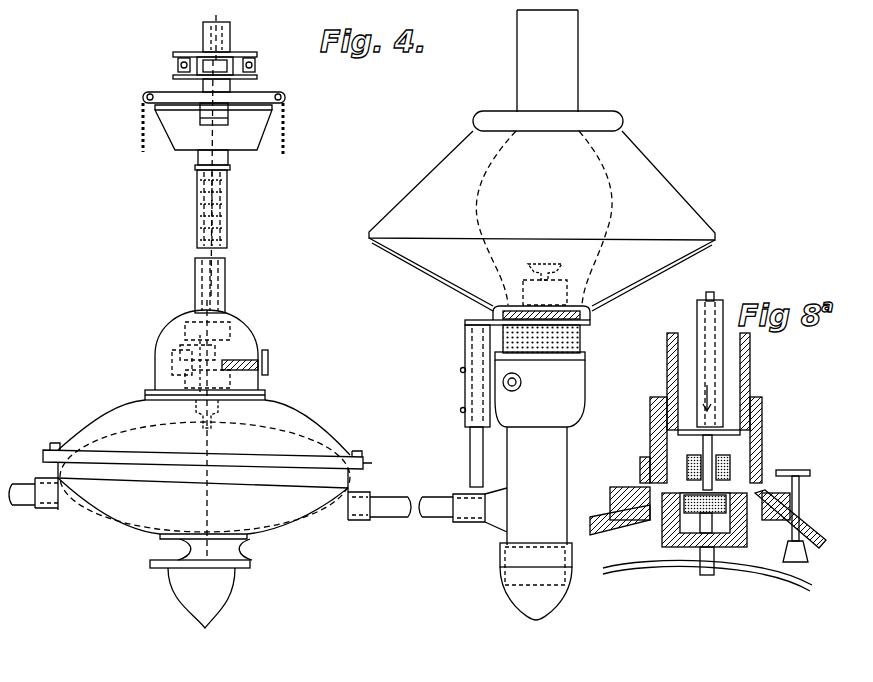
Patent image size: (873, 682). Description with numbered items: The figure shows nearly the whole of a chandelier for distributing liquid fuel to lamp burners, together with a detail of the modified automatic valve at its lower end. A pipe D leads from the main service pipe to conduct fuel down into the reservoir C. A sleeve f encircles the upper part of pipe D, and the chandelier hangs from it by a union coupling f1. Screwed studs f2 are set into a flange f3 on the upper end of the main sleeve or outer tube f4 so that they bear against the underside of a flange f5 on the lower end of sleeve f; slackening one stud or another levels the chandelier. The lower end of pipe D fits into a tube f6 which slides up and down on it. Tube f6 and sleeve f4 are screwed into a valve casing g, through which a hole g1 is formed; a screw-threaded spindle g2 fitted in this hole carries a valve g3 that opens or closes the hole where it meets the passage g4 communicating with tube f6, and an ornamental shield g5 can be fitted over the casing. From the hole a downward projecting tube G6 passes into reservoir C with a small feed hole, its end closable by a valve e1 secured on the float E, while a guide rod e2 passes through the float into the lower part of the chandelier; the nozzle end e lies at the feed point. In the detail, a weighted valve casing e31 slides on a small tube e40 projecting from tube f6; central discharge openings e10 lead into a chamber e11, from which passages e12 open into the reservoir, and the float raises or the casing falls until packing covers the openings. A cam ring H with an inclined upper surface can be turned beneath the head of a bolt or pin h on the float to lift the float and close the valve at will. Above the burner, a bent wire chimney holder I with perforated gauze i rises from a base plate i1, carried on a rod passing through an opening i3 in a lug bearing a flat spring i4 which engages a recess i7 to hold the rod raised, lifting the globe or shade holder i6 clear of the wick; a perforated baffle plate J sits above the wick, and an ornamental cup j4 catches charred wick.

In FIG. 4, the pipe D is at (224, 33).
In FIG. 4, the sleeve f is at (203, 24).
In FIG. 4, the union coupling f1 is at (178, 67).
In FIG. 4, the screwed studs f2 is at (255, 66).
In FIG. 4, the flange f3 is at (257, 79).
In FIG. 4, the main sleeve or outer tube f4 is at (227, 222).
In FIG. 4, the flange f5 is at (200, 54).
In FIG. 4, the tube f6 is at (225, 286).
In FIG. 8a, the tube f6 is at (700, 377).
In FIG. 4, the valve casing g is at (238, 333).
In FIG. 4, the hole g1 is at (246, 326).
In FIG. 4, the screw-threaded spindle g2 is at (250, 346).
In FIG. 4, the valve g3 is at (168, 364).
In FIG. 4, the passage g4 is at (178, 340).
In FIG. 4, the shield or casing g5 is at (232, 322).
In FIG. 4, the downward projecting tube G6 is at (206, 355).
In FIG. 4, the float E is at (262, 432).
In FIG. 4, the nozzle e is at (214, 409).
In FIG. 4, the valve e1 is at (197, 408).
In FIG. 4, the guide rod e2 is at (208, 478).
In FIG. 4, the reservoir C is at (210, 514).
In FIG. 8a, the reservoir C is at (790, 519).
In FIG. 4, the baffle plate J is at (556, 270).
In FIG. 4, the lamp glass chimney holder I is at (582, 300).
In FIG. 4, the perforated sheet metal or wire gauze i is at (590, 318).
In FIG. 4, the base plate i1 is at (590, 327).
In FIG. 4, the opening i3 is at (465, 346).
In FIG. 4, the flat spring i4 is at (465, 389).
In FIG. 4, the globe or shade holder i6 is at (640, 284).
In FIG. 4, the recess i7 is at (470, 481).
In FIG. 4, the ornamental cup or receptacle j4 is at (575, 582).
In FIG. 8a, the small tube e40 is at (665, 428).
In FIG. 8a, the discharge openings e10 is at (668, 456).
In FIG. 8a, the chamber e11 is at (748, 438).
In FIG. 8a, the passages e12 is at (753, 455).
In FIG. 8a, the valve casing e31 is at (662, 500).
In FIG. 8a, the cam ring H is at (794, 464).
In FIG. 8a, the bolt or pin h is at (799, 485).